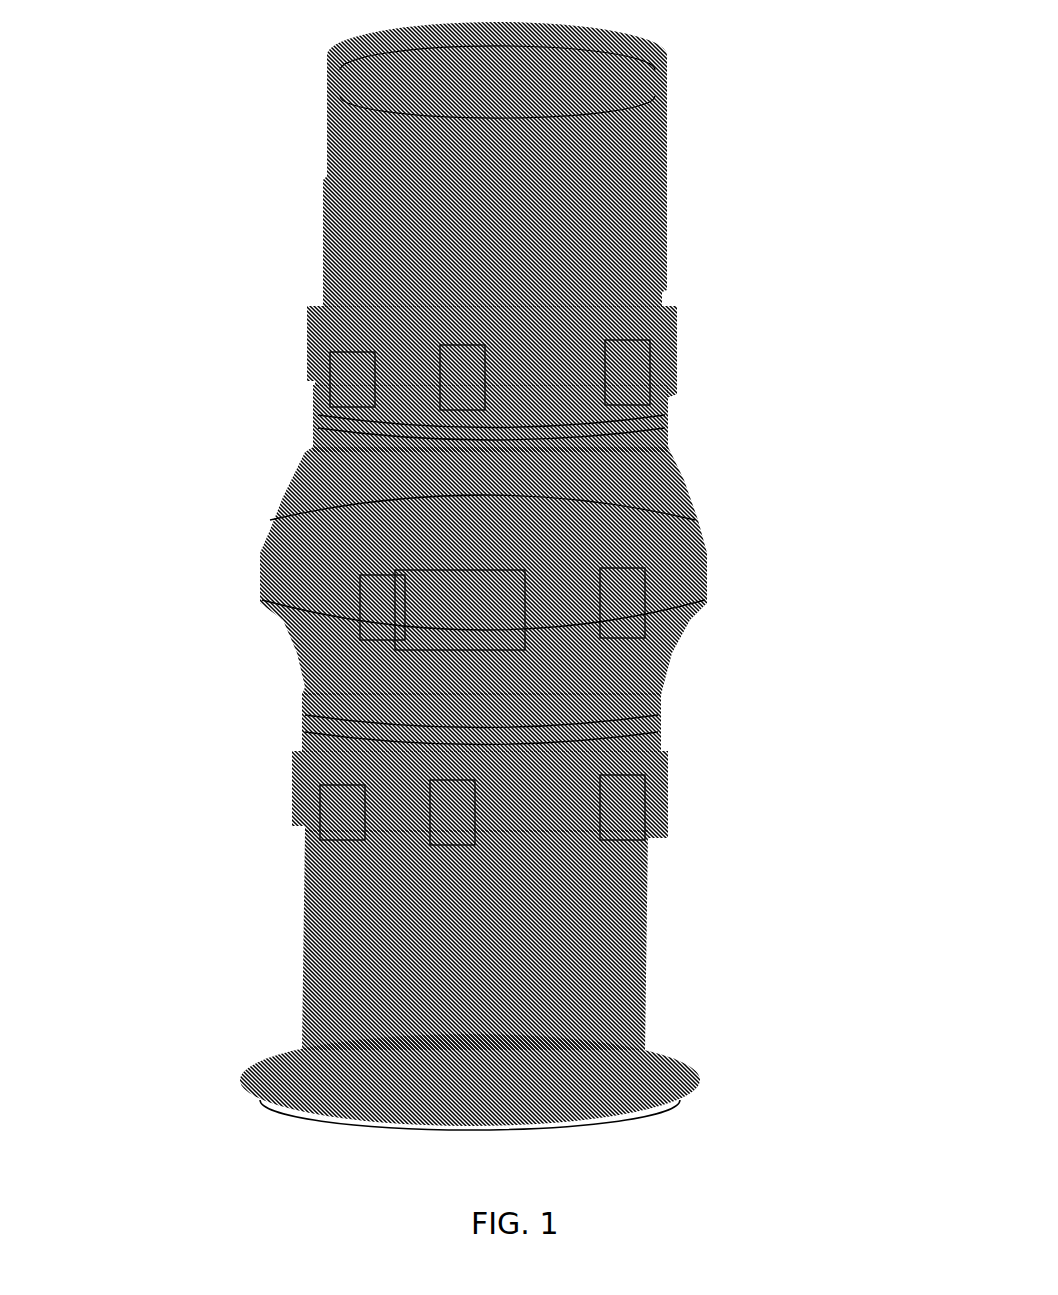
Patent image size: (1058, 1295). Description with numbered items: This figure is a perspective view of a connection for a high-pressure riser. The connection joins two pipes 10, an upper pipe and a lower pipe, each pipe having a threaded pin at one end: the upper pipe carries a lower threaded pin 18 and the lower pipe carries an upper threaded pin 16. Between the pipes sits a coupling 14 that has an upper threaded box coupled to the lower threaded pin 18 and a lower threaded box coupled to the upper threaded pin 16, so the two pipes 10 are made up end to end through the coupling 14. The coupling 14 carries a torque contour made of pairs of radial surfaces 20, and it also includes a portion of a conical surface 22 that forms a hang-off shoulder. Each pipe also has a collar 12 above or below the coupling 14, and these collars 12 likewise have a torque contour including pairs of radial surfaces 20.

The pipe 10 is at (317, 238).
The collar 12 is at (315, 368).
The coupling 14 is at (243, 578).
The upper threaded pin 16 is at (323, 708).
The lower threaded pin 18 is at (337, 447).
The radial surfaces 20 is at (450, 360).
The conical surface 22 is at (420, 643).